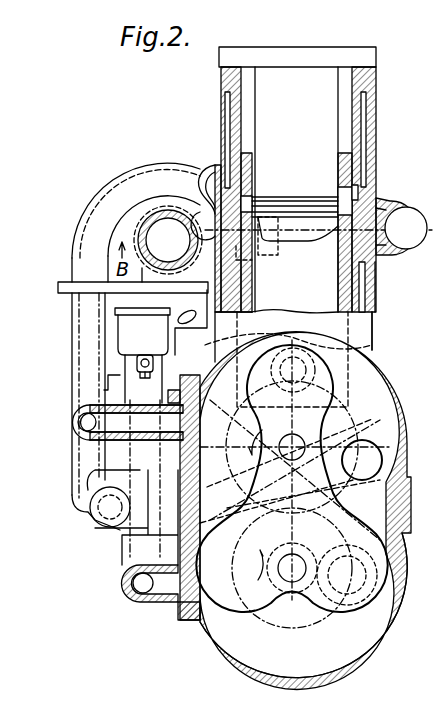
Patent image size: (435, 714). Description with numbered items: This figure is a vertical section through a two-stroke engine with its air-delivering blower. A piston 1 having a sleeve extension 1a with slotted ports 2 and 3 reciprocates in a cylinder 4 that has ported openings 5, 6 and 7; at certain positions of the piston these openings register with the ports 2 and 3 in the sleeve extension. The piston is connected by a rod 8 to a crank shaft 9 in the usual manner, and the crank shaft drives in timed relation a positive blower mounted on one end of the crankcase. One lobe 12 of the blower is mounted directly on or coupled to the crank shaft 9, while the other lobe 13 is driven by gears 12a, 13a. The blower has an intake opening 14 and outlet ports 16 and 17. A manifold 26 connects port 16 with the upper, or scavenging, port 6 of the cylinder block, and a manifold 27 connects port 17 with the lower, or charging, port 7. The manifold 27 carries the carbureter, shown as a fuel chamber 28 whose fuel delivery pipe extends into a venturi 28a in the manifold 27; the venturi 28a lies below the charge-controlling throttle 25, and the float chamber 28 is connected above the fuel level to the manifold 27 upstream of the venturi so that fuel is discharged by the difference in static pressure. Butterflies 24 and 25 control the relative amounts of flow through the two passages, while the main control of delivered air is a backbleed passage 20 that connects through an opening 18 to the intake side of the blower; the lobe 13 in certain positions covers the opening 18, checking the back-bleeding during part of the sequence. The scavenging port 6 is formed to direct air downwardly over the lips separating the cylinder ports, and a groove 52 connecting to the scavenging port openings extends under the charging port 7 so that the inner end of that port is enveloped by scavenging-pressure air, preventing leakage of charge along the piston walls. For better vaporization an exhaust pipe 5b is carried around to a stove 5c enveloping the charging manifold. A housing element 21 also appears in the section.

The piston 1 is at (357, 338).
The sleeve extension 1a is at (376, 290).
The slotted port 2 is at (252, 203).
The slotted port 3 is at (360, 200).
The cylinder 4 is at (380, 76).
The ported opening 5 is at (385, 218).
The exhaust pipe 5b is at (137, 178).
The stove 5c is at (142, 232).
The scavenging port 6 is at (205, 183).
The charging port 7 is at (182, 205).
The rod 8 is at (283, 82).
The crank shaft 9 is at (282, 240).
The lobe 12 is at (352, 548).
The gear 12a is at (241, 642).
The lobe 13 is at (318, 386).
The gear 13a is at (355, 420).
The intake opening 14 is at (400, 497).
The outlet port 16 is at (197, 426).
The outlet port 17 is at (188, 600).
The opening 18 is at (362, 460).
The backbleed passage 20 is at (148, 520).
The pump bearing 21 is at (92, 512).
The butterfly 24 is at (80, 297).
The butterfly 25 is at (112, 290).
The manifold 26 is at (125, 200).
The manifold 27 is at (104, 600).
The fuel chamber 28 is at (138, 342).
The venturi 28a is at (191, 336).
The groove 52 is at (250, 262).